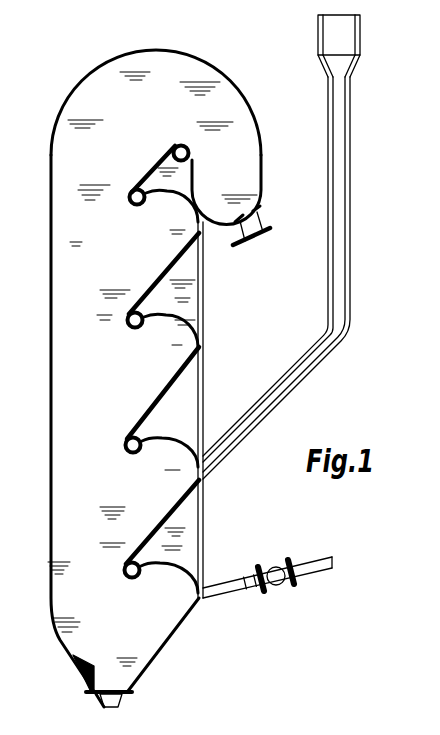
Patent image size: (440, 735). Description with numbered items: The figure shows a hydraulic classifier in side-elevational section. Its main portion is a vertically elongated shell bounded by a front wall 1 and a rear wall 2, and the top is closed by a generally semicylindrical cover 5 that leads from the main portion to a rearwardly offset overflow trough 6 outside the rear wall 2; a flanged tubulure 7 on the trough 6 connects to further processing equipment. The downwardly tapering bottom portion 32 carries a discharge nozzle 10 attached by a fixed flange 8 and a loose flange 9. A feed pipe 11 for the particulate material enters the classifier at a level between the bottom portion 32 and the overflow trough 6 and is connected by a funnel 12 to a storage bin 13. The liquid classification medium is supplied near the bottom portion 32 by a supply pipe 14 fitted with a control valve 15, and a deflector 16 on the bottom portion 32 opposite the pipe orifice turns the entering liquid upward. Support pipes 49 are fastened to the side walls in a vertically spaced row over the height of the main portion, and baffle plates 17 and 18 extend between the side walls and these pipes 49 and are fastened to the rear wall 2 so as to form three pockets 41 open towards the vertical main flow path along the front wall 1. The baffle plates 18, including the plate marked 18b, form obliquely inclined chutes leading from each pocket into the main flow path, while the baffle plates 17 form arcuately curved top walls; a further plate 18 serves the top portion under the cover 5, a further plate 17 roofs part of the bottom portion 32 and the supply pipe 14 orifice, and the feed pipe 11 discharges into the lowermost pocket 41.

The front wall 1 is at (50, 178).
The rear wall 2 is at (204, 285).
The semicylindrical cover 5 is at (62, 110).
The overflow trough 6 is at (263, 155).
The flanged tubulure 7 is at (263, 213).
The fixed flange 8 is at (132, 692).
The loose flange 9 is at (96, 700).
The discharge nozzle 10 is at (119, 705).
The feed pipe 11 is at (297, 384).
The funnel 12 is at (353, 67).
The storage bin 13 is at (358, 37).
The supply pipe 14 is at (217, 597).
The control valve 15 is at (275, 568).
The deflector 16 is at (78, 670).
The baffle plate 17 is at (173, 198).
The baffle plate 18 is at (148, 167).
The inclined plate 18b is at (173, 265).
The bottom portion 32 is at (153, 638).
The pocket 41 is at (163, 238).
The support pipe 49 is at (128, 199).